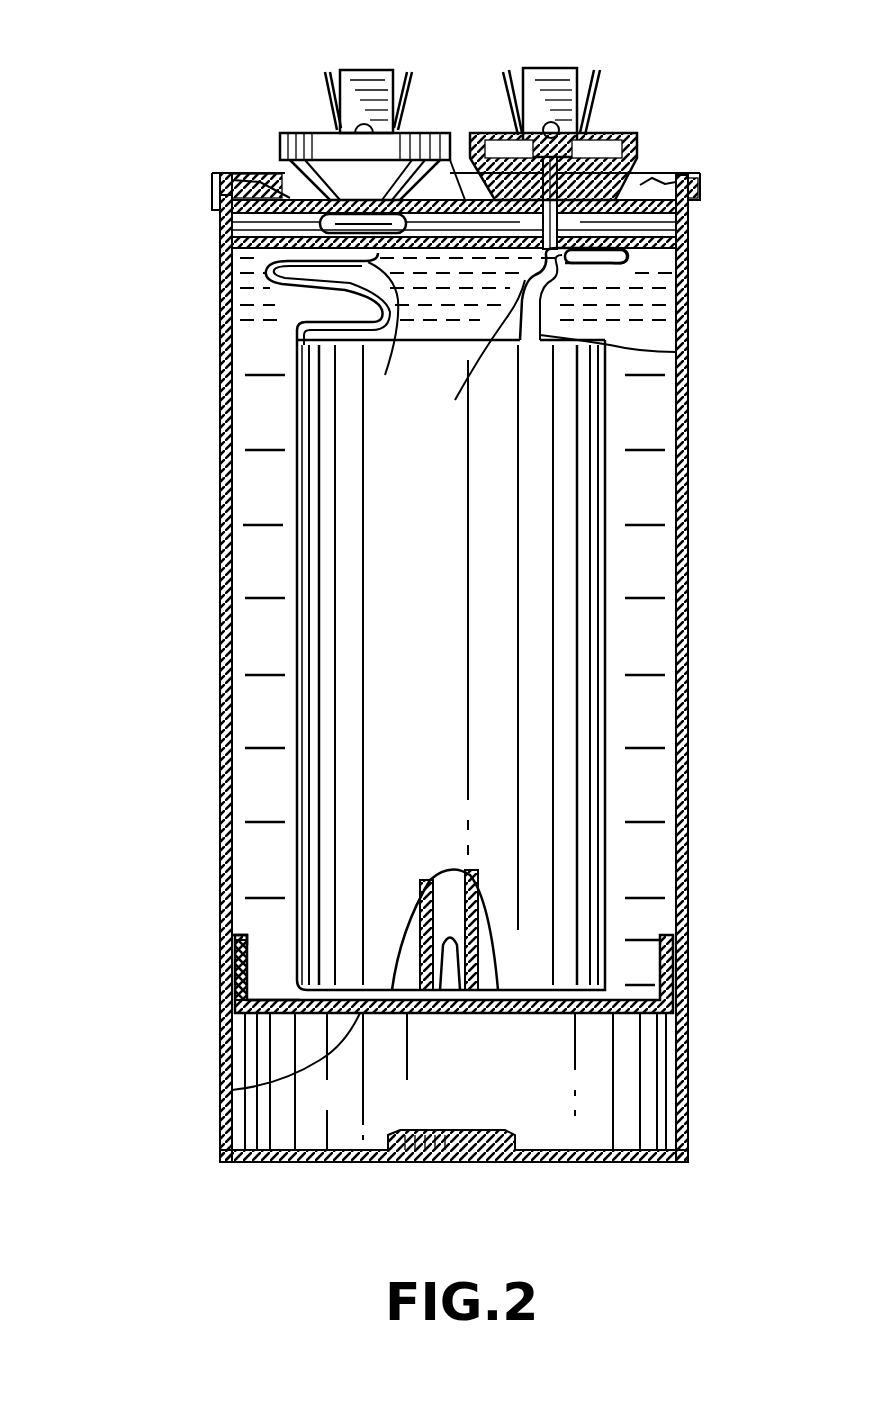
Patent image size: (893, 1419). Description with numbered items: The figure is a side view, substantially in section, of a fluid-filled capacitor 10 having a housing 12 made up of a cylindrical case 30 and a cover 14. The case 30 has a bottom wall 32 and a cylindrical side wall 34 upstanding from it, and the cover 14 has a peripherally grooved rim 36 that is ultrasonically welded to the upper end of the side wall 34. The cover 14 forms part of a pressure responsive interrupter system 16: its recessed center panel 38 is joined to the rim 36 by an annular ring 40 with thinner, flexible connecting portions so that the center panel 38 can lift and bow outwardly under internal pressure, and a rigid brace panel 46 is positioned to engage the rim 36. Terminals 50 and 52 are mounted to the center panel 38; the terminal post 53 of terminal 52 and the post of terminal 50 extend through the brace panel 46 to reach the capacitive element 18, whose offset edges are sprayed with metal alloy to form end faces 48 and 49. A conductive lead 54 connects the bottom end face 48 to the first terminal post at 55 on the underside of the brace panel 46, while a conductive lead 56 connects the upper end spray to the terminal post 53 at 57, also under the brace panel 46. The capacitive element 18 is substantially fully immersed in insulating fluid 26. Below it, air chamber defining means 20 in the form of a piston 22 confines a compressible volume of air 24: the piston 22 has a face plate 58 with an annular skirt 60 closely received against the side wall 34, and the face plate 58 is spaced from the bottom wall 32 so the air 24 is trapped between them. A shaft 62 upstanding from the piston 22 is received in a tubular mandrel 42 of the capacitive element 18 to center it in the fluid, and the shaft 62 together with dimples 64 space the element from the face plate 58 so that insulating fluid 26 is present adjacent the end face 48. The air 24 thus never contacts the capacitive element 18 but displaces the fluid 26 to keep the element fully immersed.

The capacitor 10 is at (155, 182).
The housing 12 is at (218, 508).
The cover 14 is at (244, 198).
The pressure responsive interrupter system 16 is at (235, 276).
The capacitive element 18 is at (605, 640).
The air chamber defining means 20 is at (305, 1030).
The piston 22 is at (550, 1013).
The volume of air 24 is at (496, 1088).
The insulating fluid 26 is at (640, 563).
The cylindrical case 30 is at (218, 583).
The bottom wall 32 is at (280, 1165).
The cylindrical side wall 34 is at (220, 692).
The peripherally grooved rim 36 is at (705, 185).
The recessed center panel 38 is at (458, 190).
The annular ring 40 is at (268, 210).
The tubular mandrel 42 is at (670, 960).
The rigid brace panel 46 is at (676, 268).
The bottom end face 48 is at (458, 990).
The end face 49 is at (676, 353).
The terminal 50 is at (368, 68).
The terminal 52 is at (553, 68).
The terminal post 53 is at (608, 160).
The conductive lead 54 is at (298, 303).
The connection point 55 is at (386, 333).
The conductive lead 56 is at (560, 322).
The connection point 57 is at (468, 352).
The face plate 58 is at (232, 1093).
The annular skirt 60 is at (235, 955).
The shaft 62 is at (340, 960).
The dimples 64 is at (280, 1000).